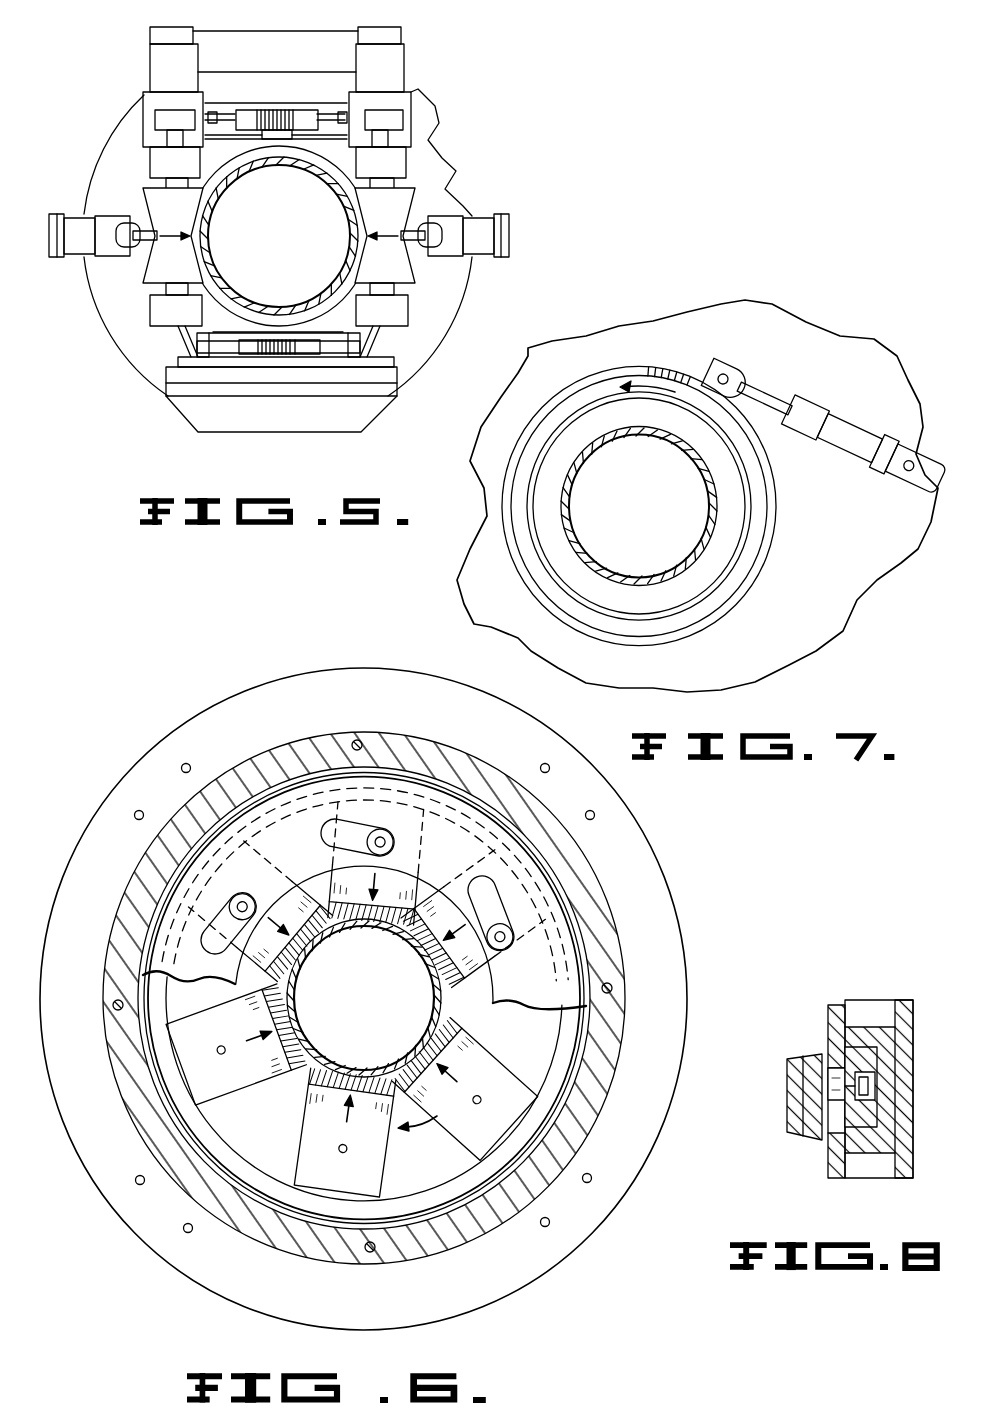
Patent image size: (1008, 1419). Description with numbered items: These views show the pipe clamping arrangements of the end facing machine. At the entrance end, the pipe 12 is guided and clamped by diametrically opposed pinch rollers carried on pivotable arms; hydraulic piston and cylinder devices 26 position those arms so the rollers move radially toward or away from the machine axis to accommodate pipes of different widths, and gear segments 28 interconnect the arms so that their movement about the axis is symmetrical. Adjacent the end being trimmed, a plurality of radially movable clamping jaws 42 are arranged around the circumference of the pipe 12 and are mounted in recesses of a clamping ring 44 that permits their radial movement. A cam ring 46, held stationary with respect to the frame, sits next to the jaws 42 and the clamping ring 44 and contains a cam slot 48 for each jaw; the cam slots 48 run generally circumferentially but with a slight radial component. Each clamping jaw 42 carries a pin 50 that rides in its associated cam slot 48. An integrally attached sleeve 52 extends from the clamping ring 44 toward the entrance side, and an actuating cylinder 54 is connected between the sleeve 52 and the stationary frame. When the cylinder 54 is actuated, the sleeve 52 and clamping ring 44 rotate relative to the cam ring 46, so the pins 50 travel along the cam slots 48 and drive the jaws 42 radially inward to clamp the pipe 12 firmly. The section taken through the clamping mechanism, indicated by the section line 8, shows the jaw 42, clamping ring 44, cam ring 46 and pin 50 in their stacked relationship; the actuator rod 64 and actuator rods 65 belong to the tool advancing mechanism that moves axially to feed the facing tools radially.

In FIG. 6, the section line 8-8 indicator 8 is at (258, 828).
In FIG. 5, the pipe 12 is at (318, 170).
In FIG. 7, the pipe 12 is at (687, 444).
In FIG. 6, the pipe 12 is at (293, 973).
In FIG. 5, the hydraulic piston and cylinder devices 26 is at (78, 217).
In FIG. 5, the gear segments 28 is at (288, 112).
In FIG. 6, the clamping jaws 42 is at (437, 948).
In FIG. 8, the clamping jaws 42 is at (872, 1116).
In FIG. 6, the clamping ring 44 is at (547, 1057).
In FIG. 8, the clamping ring 44 is at (875, 1030).
In FIG. 6, the cam ring 46 is at (512, 868).
In FIG. 8, the cam ring 46 is at (832, 1005).
In FIG. 6, the cam slots 48 is at (500, 890).
In FIG. 6, the pin 50 is at (513, 937).
In FIG. 8, the pin 50 is at (823, 1078).
In FIG. 7, the sleeve 52 is at (663, 385).
In FIG. 7, the actuating cylinder 54 is at (840, 421).
In FIG. 6, the actuator rod 64 is at (362, 742).
In FIG. 6, the actuator rods 65 is at (114, 1008).